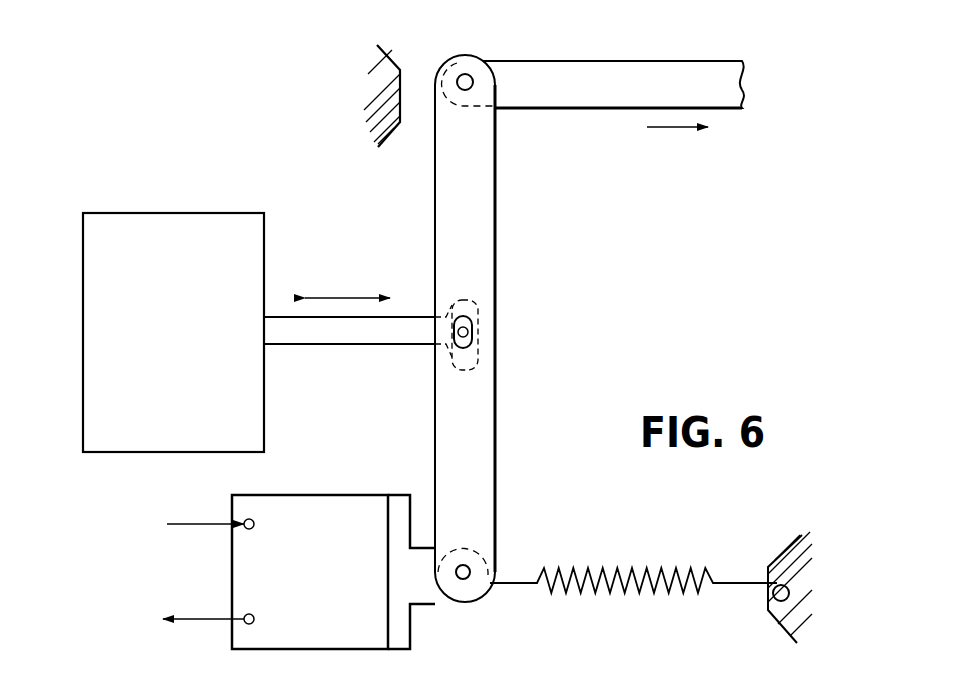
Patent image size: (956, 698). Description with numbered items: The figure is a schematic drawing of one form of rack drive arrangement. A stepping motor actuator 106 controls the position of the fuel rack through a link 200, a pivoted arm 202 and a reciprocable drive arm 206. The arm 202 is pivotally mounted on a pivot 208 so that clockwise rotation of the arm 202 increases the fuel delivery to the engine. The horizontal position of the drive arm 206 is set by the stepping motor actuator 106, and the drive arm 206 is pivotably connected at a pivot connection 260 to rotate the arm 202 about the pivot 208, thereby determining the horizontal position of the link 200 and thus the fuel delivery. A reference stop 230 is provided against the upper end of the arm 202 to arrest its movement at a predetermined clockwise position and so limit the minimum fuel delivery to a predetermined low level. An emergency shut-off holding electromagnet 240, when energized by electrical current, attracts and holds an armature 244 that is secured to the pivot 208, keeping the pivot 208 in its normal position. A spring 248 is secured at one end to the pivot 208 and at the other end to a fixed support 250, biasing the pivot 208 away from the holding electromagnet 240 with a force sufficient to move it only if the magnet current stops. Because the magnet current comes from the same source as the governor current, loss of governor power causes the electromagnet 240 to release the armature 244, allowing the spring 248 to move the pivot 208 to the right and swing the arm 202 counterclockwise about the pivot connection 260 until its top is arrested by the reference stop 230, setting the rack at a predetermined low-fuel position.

The stepping motor actuator 106 is at (98, 294).
The link 200 is at (570, 100).
The pivoted arm 202 is at (480, 280).
The reciprocable drive arm 206 is at (318, 338).
The pivot 208 is at (463, 579).
The reference stop 230 is at (393, 124).
The emergency shut-off holding electromagnet 240 is at (305, 641).
The armature 244 is at (400, 624).
The spring 248 is at (593, 585).
The fixed support 250 is at (800, 608).
The pivot connection 260 is at (465, 333).